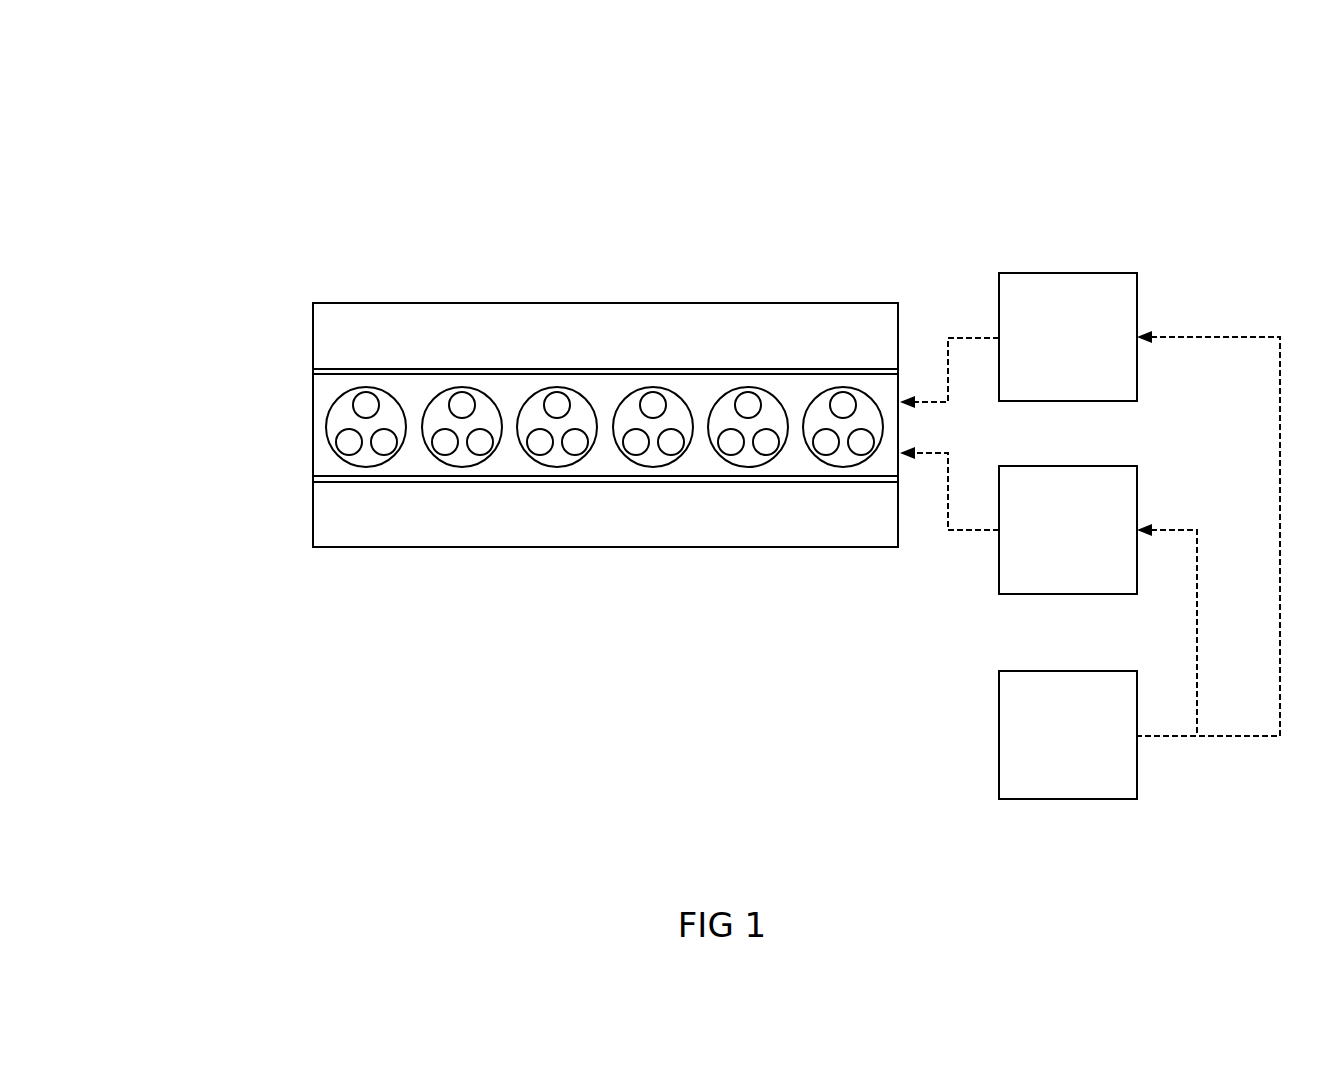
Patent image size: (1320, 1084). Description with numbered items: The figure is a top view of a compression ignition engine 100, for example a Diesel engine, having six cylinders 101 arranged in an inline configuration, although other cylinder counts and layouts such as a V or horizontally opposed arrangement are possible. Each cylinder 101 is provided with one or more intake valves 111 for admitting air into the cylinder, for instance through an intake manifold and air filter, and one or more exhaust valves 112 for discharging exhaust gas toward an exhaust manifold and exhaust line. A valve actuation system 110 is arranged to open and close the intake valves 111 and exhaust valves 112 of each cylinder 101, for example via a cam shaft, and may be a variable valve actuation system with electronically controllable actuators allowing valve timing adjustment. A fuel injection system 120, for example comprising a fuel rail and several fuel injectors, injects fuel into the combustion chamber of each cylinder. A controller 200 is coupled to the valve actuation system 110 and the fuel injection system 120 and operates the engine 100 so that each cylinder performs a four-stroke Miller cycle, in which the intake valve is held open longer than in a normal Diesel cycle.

The compression ignition engine 100 is at (197, 107).
The cylinder 101 is at (330, 410).
The intake valve 111 is at (366, 398).
The exhaust valve 112 is at (347, 448).
The valve actuation system 110 is at (1068, 337).
The fuel injection system 120 is at (1068, 530).
The controller 200 is at (1068, 735).